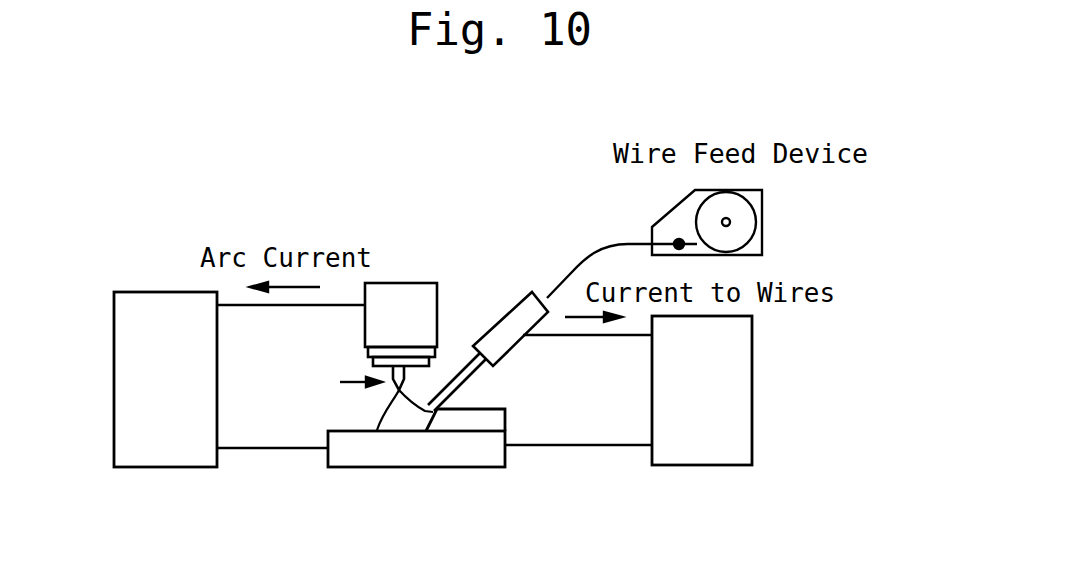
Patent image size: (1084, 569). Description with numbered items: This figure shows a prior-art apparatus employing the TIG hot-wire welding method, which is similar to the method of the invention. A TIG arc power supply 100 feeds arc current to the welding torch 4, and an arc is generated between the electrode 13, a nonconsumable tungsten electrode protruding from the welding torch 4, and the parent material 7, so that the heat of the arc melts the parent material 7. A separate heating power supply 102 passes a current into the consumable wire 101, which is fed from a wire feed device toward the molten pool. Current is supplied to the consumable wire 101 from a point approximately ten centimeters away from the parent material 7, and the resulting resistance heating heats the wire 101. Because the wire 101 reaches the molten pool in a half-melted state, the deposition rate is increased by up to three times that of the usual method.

The TIG arc power supply 100 is at (163, 292).
The welding torch 4 is at (397, 295).
The consumable wire 101 is at (463, 368).
The heating power supply 102 is at (752, 396).
The parent material 7 is at (382, 452).
The electrode 13 is at (228, 373).